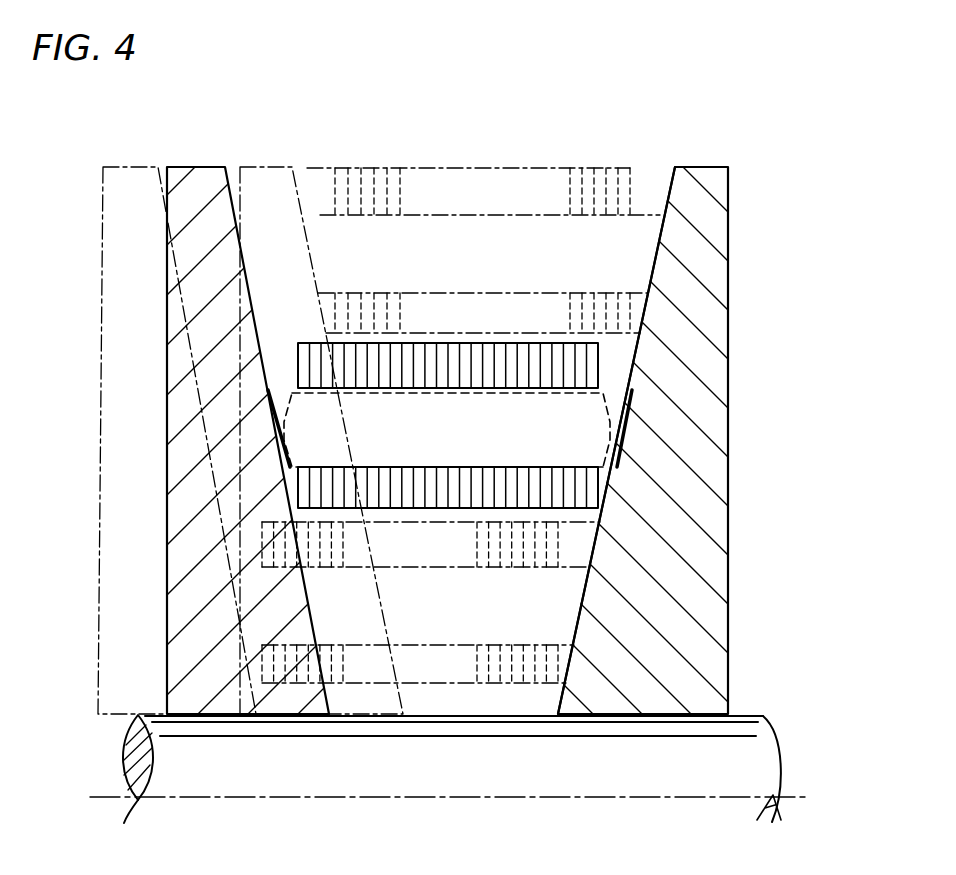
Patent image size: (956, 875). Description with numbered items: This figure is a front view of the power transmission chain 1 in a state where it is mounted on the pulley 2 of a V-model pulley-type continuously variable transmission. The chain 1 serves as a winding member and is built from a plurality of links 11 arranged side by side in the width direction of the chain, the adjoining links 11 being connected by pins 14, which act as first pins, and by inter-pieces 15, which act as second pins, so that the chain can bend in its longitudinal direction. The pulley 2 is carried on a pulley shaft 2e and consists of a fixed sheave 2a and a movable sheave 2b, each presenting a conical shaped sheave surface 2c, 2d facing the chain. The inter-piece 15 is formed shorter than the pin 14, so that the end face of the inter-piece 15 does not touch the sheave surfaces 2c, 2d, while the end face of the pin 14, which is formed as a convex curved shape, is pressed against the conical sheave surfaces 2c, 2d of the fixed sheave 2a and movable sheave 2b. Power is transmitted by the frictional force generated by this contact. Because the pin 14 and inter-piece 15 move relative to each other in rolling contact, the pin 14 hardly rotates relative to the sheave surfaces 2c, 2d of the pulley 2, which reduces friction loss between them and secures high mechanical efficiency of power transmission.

The power transmission chain 1 is at (516, 168).
The link 11 is at (344, 346).
The pin 14 is at (613, 402).
The inter-piece 15 is at (612, 447).
The pulley 2 is at (728, 328).
The fixed sheave 2a is at (708, 560).
The movable sheave 2b is at (130, 166).
The conical shaped sheave surface 2c is at (655, 258).
The conical shaped sheave surface 2d is at (243, 262).
The pulley shaft 2e is at (753, 760).